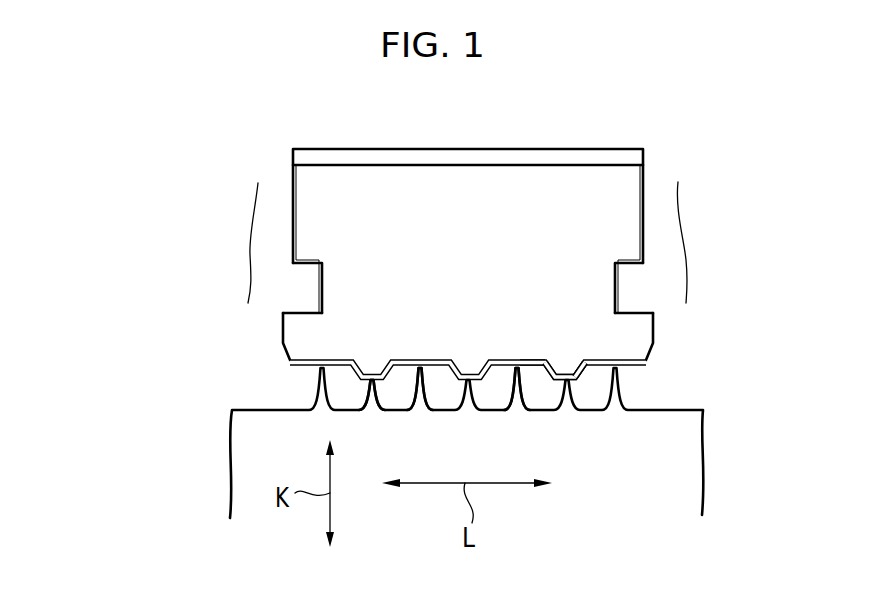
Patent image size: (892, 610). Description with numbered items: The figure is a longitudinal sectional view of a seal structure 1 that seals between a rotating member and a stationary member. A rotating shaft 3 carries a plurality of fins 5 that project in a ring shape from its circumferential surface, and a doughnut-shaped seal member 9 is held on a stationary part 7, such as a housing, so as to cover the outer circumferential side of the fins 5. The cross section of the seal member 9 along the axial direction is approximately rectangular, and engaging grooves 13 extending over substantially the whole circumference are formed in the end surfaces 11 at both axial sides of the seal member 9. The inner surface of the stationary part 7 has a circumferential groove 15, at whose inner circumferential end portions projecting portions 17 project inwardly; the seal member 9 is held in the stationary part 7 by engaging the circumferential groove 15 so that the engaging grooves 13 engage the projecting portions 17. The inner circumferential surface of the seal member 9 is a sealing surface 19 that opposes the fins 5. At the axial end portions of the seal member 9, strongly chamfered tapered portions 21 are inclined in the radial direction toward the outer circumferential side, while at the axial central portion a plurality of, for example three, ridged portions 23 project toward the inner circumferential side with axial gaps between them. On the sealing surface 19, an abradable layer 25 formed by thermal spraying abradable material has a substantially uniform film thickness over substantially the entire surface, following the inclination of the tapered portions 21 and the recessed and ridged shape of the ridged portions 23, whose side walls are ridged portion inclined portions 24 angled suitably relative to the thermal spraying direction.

The seal structure 1 is at (427, 308).
The rotating shaft 3 is at (680, 447).
The fins 5 is at (413, 395).
The stationary part 7 is at (660, 209).
The seal member 9 is at (512, 192).
The end surfaces 11 is at (283, 334).
The engaging grooves 13 is at (310, 311).
The circumferential groove 15 is at (595, 158).
The projecting portions 17 is at (305, 284).
The sealing surface 19 is at (532, 363).
The tapered portions 21 is at (288, 363).
The ridged portions 23 is at (566, 372).
The ridged portion inclined portions 24 is at (583, 370).
The abradable layer 25 is at (372, 383).